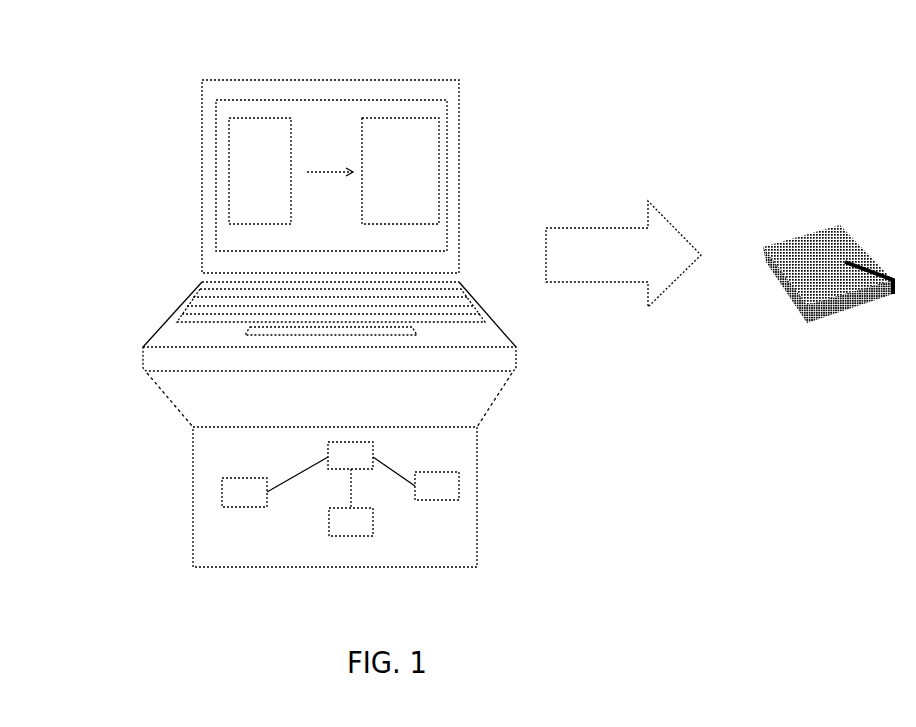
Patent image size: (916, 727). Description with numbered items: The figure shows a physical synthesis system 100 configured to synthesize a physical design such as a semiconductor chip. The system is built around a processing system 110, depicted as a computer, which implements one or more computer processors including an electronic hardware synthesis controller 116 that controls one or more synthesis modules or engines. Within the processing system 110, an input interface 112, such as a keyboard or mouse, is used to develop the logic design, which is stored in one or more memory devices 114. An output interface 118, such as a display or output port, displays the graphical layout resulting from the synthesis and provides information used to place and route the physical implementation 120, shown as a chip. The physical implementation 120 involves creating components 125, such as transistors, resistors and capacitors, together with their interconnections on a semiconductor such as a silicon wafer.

The physical synthesis system 100 is at (82, 101).
The processing system 110 is at (216, 80).
The input interface 112 is at (244, 492).
The memory devices 114 is at (351, 522).
The electronic hardware synthesis controller 116 is at (350, 455).
The output interface 118 is at (437, 486).
The physical implementation 120 is at (823, 227).
The components 125 is at (800, 280).